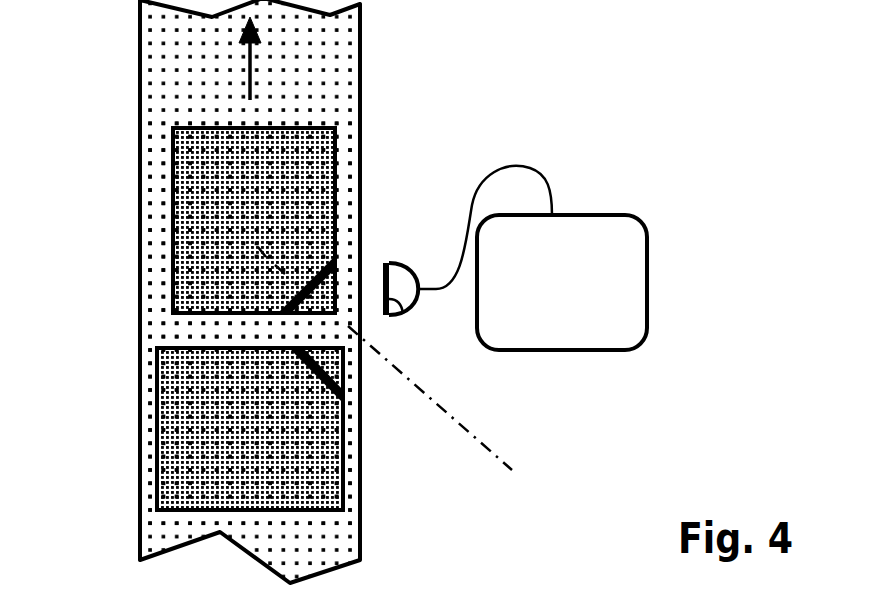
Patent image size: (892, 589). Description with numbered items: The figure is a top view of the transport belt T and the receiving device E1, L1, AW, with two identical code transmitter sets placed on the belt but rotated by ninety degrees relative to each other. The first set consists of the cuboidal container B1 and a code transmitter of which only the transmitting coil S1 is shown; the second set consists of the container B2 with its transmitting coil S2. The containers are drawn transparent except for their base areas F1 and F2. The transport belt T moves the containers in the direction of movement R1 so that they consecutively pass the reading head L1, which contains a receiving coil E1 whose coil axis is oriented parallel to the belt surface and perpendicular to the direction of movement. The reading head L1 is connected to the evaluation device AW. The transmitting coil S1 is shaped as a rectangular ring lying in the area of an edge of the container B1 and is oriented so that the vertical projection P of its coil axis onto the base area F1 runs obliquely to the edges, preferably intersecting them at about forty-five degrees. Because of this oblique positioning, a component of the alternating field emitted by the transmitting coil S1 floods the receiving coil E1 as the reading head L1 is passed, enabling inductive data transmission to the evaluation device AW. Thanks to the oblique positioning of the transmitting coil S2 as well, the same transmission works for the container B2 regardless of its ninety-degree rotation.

The transport belt T is at (173, 60).
The direction of movement R1 is at (247, 68).
The base area F1 is at (222, 170).
The cuboidal container B1 is at (167, 223).
The transmitting coil S1 is at (290, 305).
The transmitting coil S2 is at (300, 368).
The base area F2 is at (222, 427).
The cuboidal container B2 is at (157, 478).
The reading head L1 is at (402, 277).
The receiving coil E1 is at (397, 300).
The evaluation device AW is at (535, 291).
The projection of coil axis P is at (443, 408).